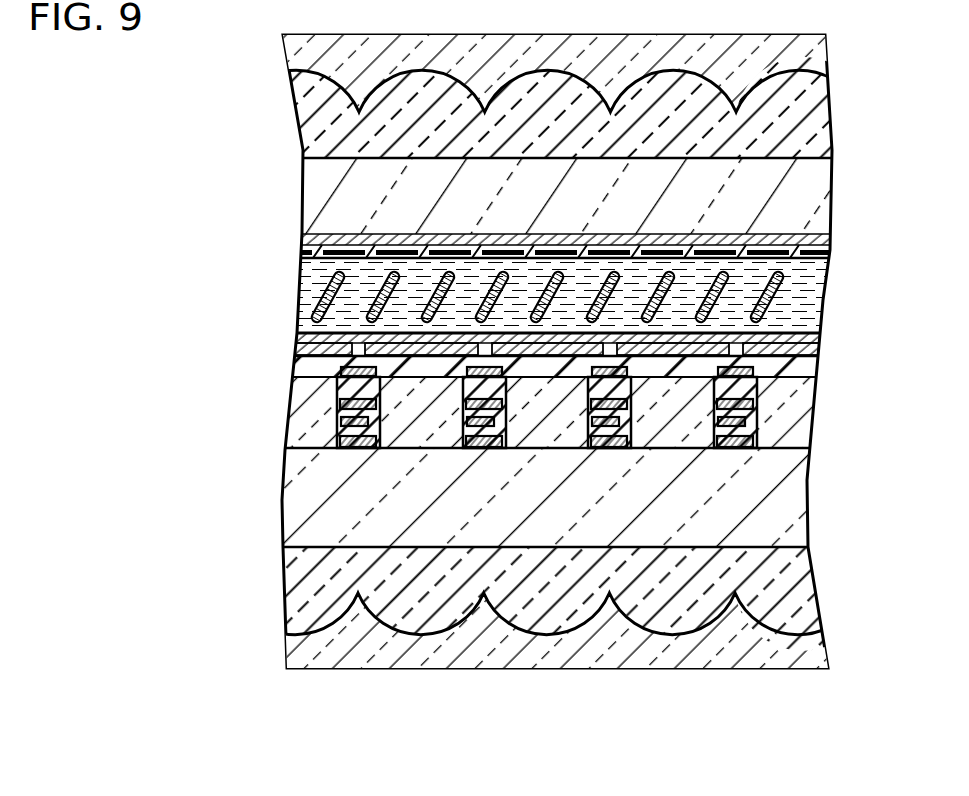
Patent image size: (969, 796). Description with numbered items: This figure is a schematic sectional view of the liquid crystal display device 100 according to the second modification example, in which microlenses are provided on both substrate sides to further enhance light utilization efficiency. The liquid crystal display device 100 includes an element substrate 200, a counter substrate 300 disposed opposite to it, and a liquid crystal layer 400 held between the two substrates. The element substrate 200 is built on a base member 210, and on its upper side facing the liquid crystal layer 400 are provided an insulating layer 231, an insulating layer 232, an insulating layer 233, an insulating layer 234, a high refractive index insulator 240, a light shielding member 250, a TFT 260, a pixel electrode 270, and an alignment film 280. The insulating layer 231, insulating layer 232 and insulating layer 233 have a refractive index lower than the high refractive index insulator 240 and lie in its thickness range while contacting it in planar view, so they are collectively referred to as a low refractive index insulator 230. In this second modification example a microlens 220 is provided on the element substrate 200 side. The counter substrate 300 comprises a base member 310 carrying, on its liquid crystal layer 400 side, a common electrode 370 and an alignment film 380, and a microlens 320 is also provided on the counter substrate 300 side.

The liquid crystal display device 100 is at (220, 98).
The element substrate 200 is at (540, 559).
The base member 210 is at (818, 651).
The microlens 220 is at (808, 594).
The low refractive index insulator 230 is at (643, 430).
The insulating layer 231 is at (757, 447).
The insulating layer 232 is at (757, 417).
The insulating layer 233 is at (757, 395).
The insulating layer 234 is at (808, 368).
The high refractive index insulator 240 is at (550, 447).
The light shielding member 250 is at (610, 458).
The TFT 260 is at (602, 447).
The pixel electrode 270 is at (817, 349).
The alignment film 280 is at (822, 334).
The counter substrate 300 is at (543, 132).
The base member 310 is at (828, 56).
The microlens 320 is at (832, 125).
The common electrode 370 is at (823, 240).
The alignment film 380 is at (822, 253).
The liquid crystal layer 400 is at (296, 310).